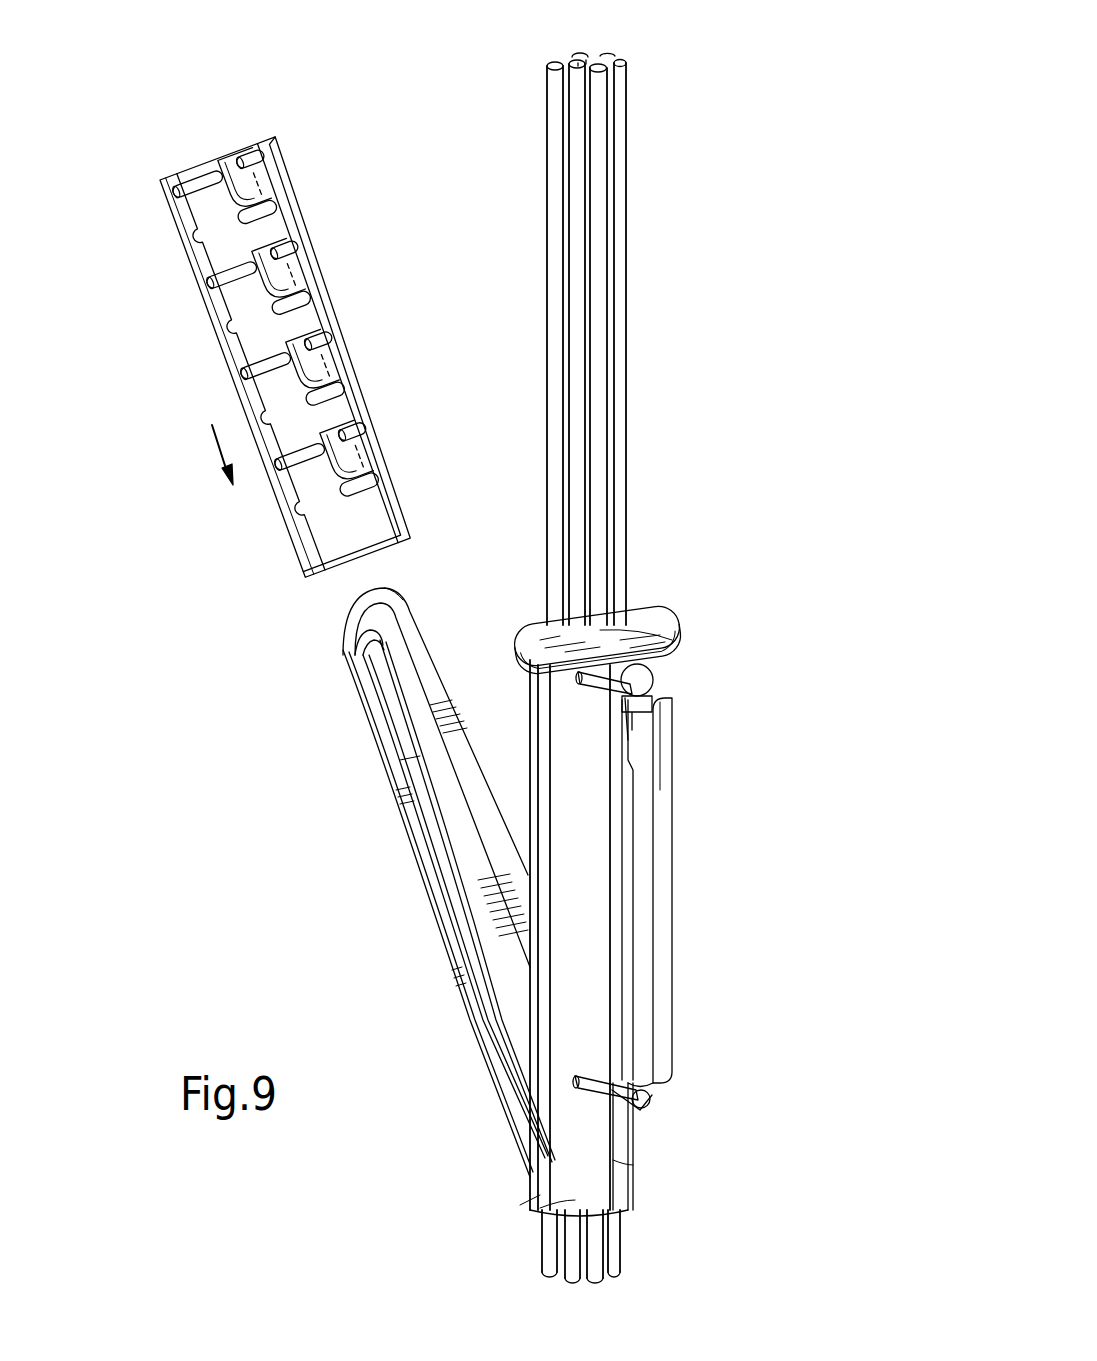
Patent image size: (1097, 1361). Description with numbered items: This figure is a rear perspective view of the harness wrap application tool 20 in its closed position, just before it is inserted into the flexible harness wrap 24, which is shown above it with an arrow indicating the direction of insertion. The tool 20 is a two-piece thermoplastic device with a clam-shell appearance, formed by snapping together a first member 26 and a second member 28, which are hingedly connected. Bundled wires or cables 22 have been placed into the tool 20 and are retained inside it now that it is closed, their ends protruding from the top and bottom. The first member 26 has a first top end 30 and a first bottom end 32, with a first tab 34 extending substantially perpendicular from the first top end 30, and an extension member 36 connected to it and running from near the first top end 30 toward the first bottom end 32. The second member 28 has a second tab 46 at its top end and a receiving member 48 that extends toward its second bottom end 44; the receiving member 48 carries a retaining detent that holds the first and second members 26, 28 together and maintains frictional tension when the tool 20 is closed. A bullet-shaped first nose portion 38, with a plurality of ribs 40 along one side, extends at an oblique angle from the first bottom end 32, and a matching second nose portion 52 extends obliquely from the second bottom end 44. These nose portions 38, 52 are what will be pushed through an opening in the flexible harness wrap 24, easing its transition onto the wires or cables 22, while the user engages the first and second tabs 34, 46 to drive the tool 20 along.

The harness wrap application tool 20 is at (683, 757).
The wires or cables 22 is at (605, 60).
The flexible harness wrap 24 is at (200, 165).
The first member 26 is at (562, 1190).
The second member 28 is at (634, 1172).
The first top end 30 is at (532, 712).
The first bottom end 32 is at (536, 1180).
The first tab 34 is at (540, 645).
The extension member 36 is at (648, 672).
The first nose portion 38 is at (373, 590).
The ribs 40 is at (410, 745).
The second bottom end 44 is at (626, 1205).
The second tab 46 is at (656, 620).
The receiving member 48 is at (668, 865).
The second nose portion 52 is at (396, 592).